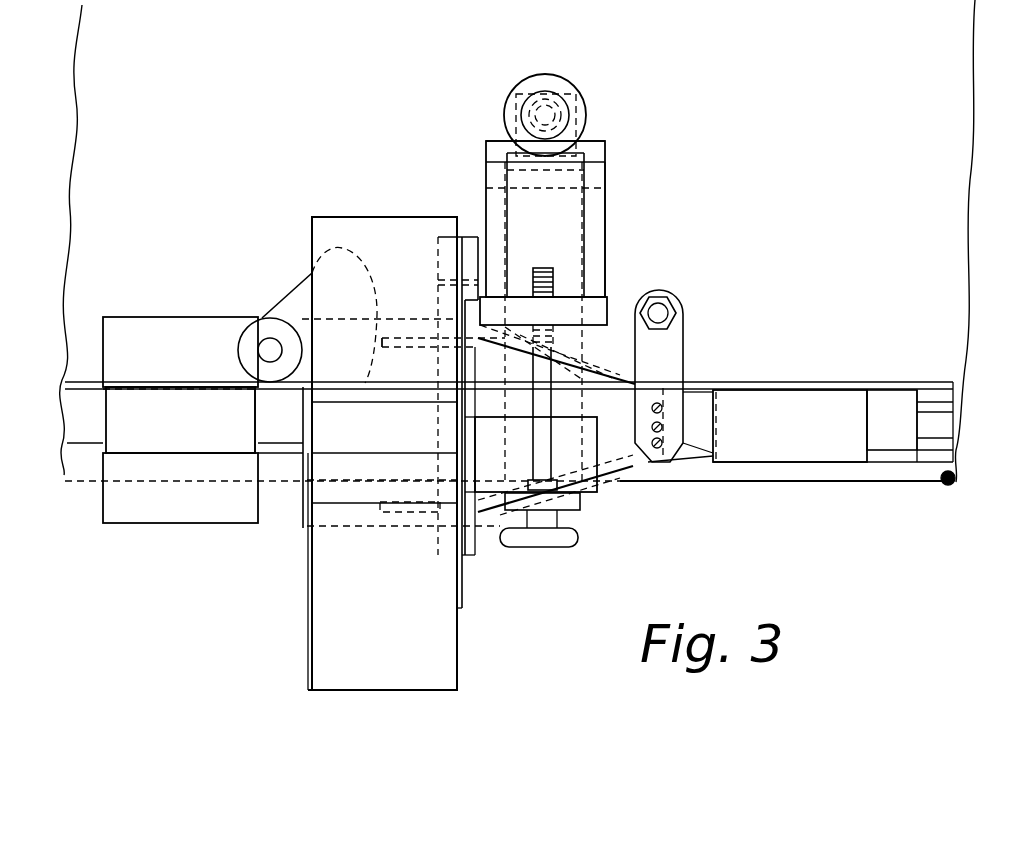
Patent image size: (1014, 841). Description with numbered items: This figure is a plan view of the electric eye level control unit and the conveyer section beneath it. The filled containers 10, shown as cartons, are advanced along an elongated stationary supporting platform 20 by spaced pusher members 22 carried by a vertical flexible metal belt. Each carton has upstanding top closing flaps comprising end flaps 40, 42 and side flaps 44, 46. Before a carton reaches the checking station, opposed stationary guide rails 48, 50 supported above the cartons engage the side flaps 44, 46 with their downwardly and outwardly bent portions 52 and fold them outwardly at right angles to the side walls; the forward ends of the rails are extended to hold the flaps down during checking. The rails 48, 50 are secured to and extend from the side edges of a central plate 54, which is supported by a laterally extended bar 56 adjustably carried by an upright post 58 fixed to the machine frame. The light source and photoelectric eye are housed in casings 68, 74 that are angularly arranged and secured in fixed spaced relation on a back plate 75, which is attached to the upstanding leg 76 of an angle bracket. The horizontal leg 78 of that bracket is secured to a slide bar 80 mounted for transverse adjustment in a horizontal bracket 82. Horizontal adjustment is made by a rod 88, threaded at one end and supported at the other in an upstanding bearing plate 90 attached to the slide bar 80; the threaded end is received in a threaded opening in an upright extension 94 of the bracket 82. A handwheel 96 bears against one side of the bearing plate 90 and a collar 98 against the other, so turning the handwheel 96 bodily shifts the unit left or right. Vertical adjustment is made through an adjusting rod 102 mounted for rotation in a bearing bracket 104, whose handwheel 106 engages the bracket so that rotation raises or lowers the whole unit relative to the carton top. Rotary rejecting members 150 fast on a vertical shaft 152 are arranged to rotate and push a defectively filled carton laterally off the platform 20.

The filled containers 10 is at (103, 452).
The stationary supporting platform 20 is at (945, 457).
The pusher members 22 is at (287, 447).
The end flaps 40 is at (106, 417).
The end flaps 42 is at (255, 417).
The side flaps 44 is at (162, 318).
The side flaps 46 is at (202, 523).
The stationary guide rails 48 is at (407, 338).
The stationary guide rails 50 is at (412, 512).
The downwardly and outwardly bent portions 52 is at (575, 362).
The central plate 54 is at (697, 397).
The laterally extended bar 56 is at (683, 330).
The upright post 58 is at (668, 305).
The casing 68 is at (374, 217).
The casing 74 is at (380, 690).
The back plate 75 is at (462, 378).
The upstanding leg 76 is at (468, 420).
The horizontal leg 78 is at (596, 435).
The slide bar 80 is at (585, 228).
The horizontal bracket 82 is at (605, 197).
The rod 88 is at (547, 397).
The upstanding bearing plate 90 is at (582, 510).
The upright extension 94 is at (607, 298).
The handwheel 96 is at (566, 547).
The collar 98 is at (550, 480).
The adjusting rod 102 is at (585, 94).
The bearing bracket 104 is at (603, 145).
The handwheel 106 is at (588, 113).
The rotary members 150 is at (292, 288).
The vertical shaft 152 is at (265, 340).